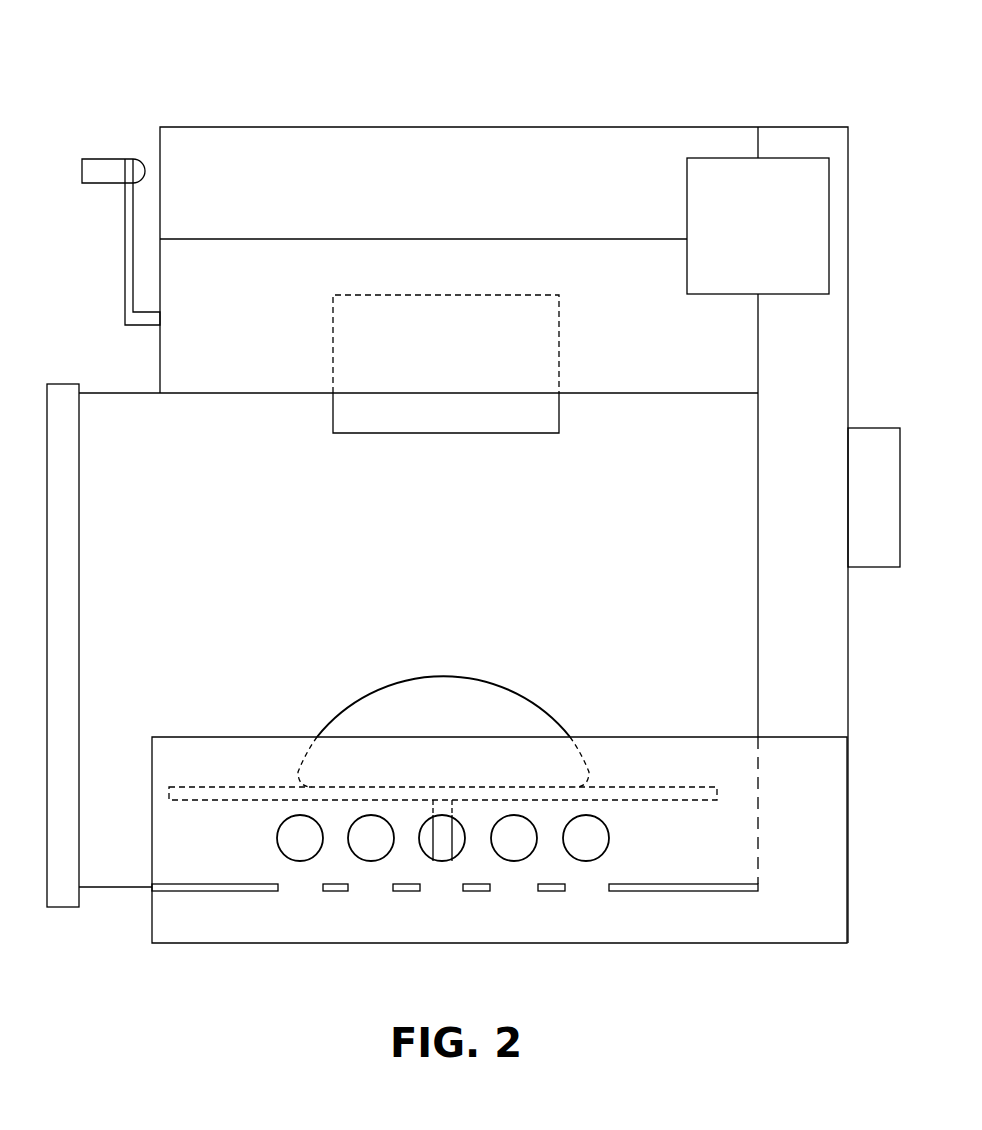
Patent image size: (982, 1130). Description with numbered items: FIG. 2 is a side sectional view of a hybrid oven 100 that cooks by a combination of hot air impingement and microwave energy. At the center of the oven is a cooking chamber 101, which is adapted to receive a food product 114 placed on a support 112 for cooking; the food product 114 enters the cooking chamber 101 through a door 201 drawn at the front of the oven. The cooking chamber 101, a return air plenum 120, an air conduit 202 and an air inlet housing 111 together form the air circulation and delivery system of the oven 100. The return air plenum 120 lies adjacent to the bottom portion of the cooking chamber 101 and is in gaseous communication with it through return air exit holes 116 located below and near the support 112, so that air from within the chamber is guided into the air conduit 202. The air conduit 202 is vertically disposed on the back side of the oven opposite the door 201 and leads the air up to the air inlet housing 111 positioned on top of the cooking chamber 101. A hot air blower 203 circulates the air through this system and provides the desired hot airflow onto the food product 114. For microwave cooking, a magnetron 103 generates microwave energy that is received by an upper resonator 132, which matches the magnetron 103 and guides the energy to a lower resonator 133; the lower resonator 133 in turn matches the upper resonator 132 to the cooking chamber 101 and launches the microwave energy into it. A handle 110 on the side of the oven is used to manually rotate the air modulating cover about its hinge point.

The hybrid oven 100 is at (512, 78).
The cooking chamber 101 is at (121, 703).
The magnetron 103 is at (793, 183).
The handle 110 is at (128, 252).
The air inlet housing 111 is at (624, 150).
The support 112 is at (644, 795).
The food product 114 is at (522, 713).
The return air exit hole 116 is at (299, 838).
The return air plenum 120 is at (213, 925).
The upper resonator 132 is at (238, 355).
The lower resonator 133 is at (494, 413).
The door 201 is at (58, 880).
The air conduit 202 is at (807, 698).
The hot air blower 203 is at (871, 555).